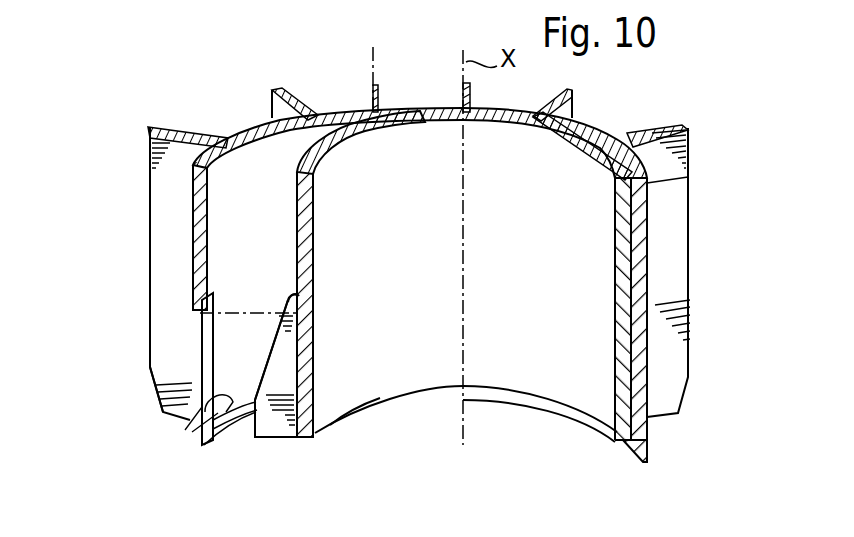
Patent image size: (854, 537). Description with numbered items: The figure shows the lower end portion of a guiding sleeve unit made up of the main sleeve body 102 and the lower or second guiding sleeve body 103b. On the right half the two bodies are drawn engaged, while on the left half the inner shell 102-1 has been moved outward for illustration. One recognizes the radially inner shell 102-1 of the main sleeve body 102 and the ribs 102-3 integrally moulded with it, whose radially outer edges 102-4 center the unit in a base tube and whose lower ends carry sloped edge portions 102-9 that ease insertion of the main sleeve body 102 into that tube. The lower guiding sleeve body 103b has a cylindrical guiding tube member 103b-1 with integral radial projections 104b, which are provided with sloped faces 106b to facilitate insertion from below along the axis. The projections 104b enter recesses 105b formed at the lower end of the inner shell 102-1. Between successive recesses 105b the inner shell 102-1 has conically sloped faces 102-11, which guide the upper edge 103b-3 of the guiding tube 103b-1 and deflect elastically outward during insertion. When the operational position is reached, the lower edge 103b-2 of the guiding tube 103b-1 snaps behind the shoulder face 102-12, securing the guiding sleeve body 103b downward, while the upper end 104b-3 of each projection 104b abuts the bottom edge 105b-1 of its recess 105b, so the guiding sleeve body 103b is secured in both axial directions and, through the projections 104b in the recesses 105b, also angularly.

The main sleeve body 102 is at (188, 264).
The radially inner shell 102-1 is at (195, 226).
The ribs 102-3 is at (148, 141).
The radially outer edges of the ribs 102-4 is at (147, 186).
The sloped edge portions 102-9 is at (150, 382).
The conically sloped faces 102-11 is at (240, 437).
The shoulder face 102-12 is at (202, 402).
The lower guiding sleeve body 103b is at (394, 390).
The cylindrical guiding tube member 103b-1 is at (313, 257).
The lower edge of the guiding tube 103b-2 is at (352, 408).
The upper edge of the guiding tube 103b-3 is at (357, 148).
The radial projections 104b is at (283, 423).
The upper end of the projection 104b-3 is at (291, 308).
The recesses 105b is at (207, 348).
The bottom edge of the recess 105b-1 is at (200, 314).
The sloped faces of the projections 106b is at (264, 352).